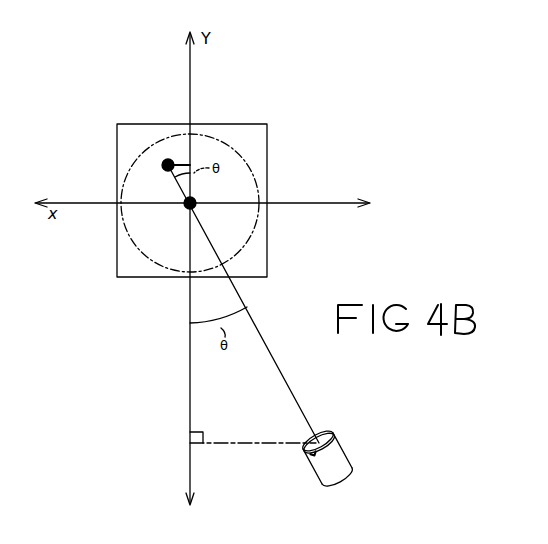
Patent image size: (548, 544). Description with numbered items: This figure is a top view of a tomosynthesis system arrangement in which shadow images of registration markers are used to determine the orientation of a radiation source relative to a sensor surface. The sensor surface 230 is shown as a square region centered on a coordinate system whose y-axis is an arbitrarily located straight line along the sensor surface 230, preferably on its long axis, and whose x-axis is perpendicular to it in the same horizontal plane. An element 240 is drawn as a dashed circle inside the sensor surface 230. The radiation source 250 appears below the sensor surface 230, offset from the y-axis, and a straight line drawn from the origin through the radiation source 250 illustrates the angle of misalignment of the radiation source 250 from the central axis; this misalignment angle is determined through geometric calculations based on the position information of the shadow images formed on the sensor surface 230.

The sensor surface 230 is at (252, 128).
The circular path 240 is at (211, 143).
The radiation source 250 is at (333, 448).